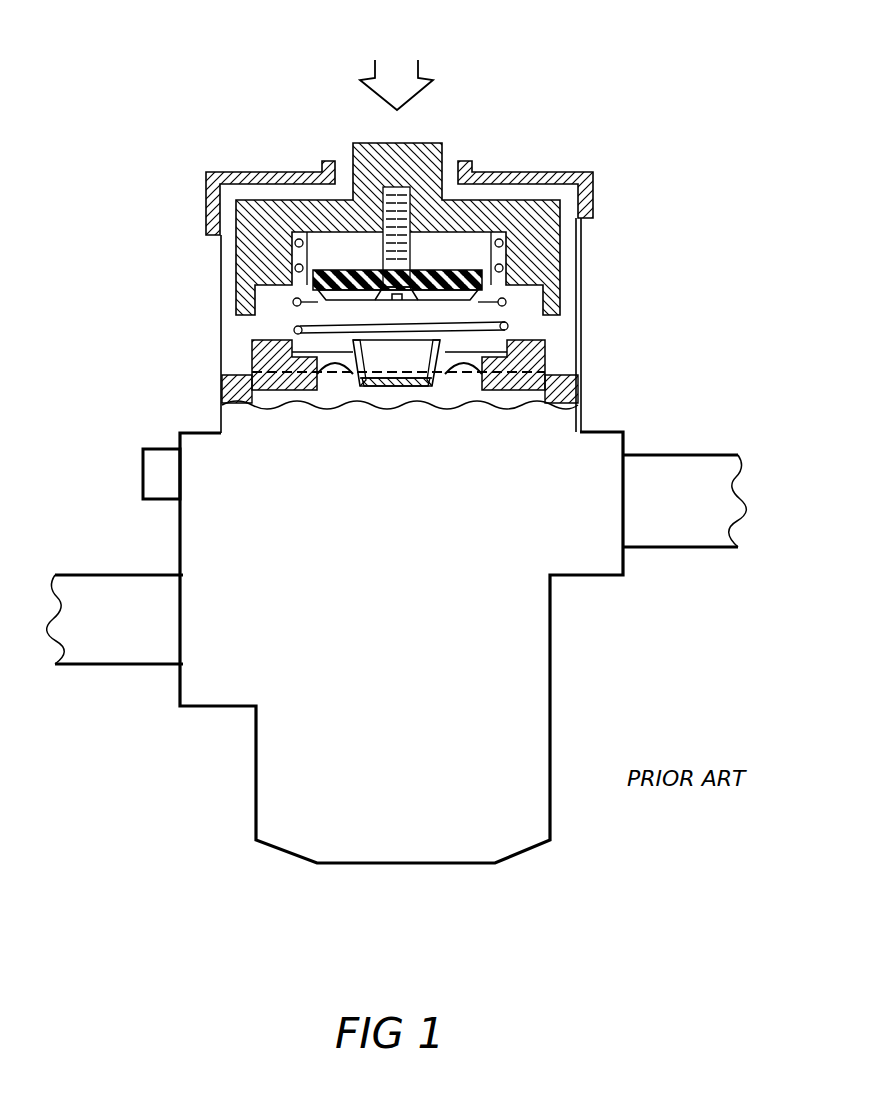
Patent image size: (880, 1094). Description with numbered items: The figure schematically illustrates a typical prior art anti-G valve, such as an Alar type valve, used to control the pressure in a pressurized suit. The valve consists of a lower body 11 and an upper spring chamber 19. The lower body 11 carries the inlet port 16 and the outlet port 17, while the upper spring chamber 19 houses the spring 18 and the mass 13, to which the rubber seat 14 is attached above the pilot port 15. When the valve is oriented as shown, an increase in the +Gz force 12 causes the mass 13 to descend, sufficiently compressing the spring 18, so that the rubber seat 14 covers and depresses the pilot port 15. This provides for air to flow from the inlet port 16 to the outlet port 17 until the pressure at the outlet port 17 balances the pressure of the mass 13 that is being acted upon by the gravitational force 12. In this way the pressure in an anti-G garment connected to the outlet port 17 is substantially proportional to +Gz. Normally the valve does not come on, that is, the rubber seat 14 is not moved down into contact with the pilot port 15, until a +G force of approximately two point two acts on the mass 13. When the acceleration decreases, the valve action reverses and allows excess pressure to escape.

The lower body 11 is at (550, 680).
The +Gz force 12 is at (412, 100).
The mass 13 is at (560, 240).
The rubber seat 14 is at (350, 285).
The pilot port 15 is at (408, 375).
The inlet port 16 is at (163, 665).
The outlet port 17 is at (660, 455).
The spring 18 is at (506, 325).
The upper spring chamber 19 is at (220, 270).